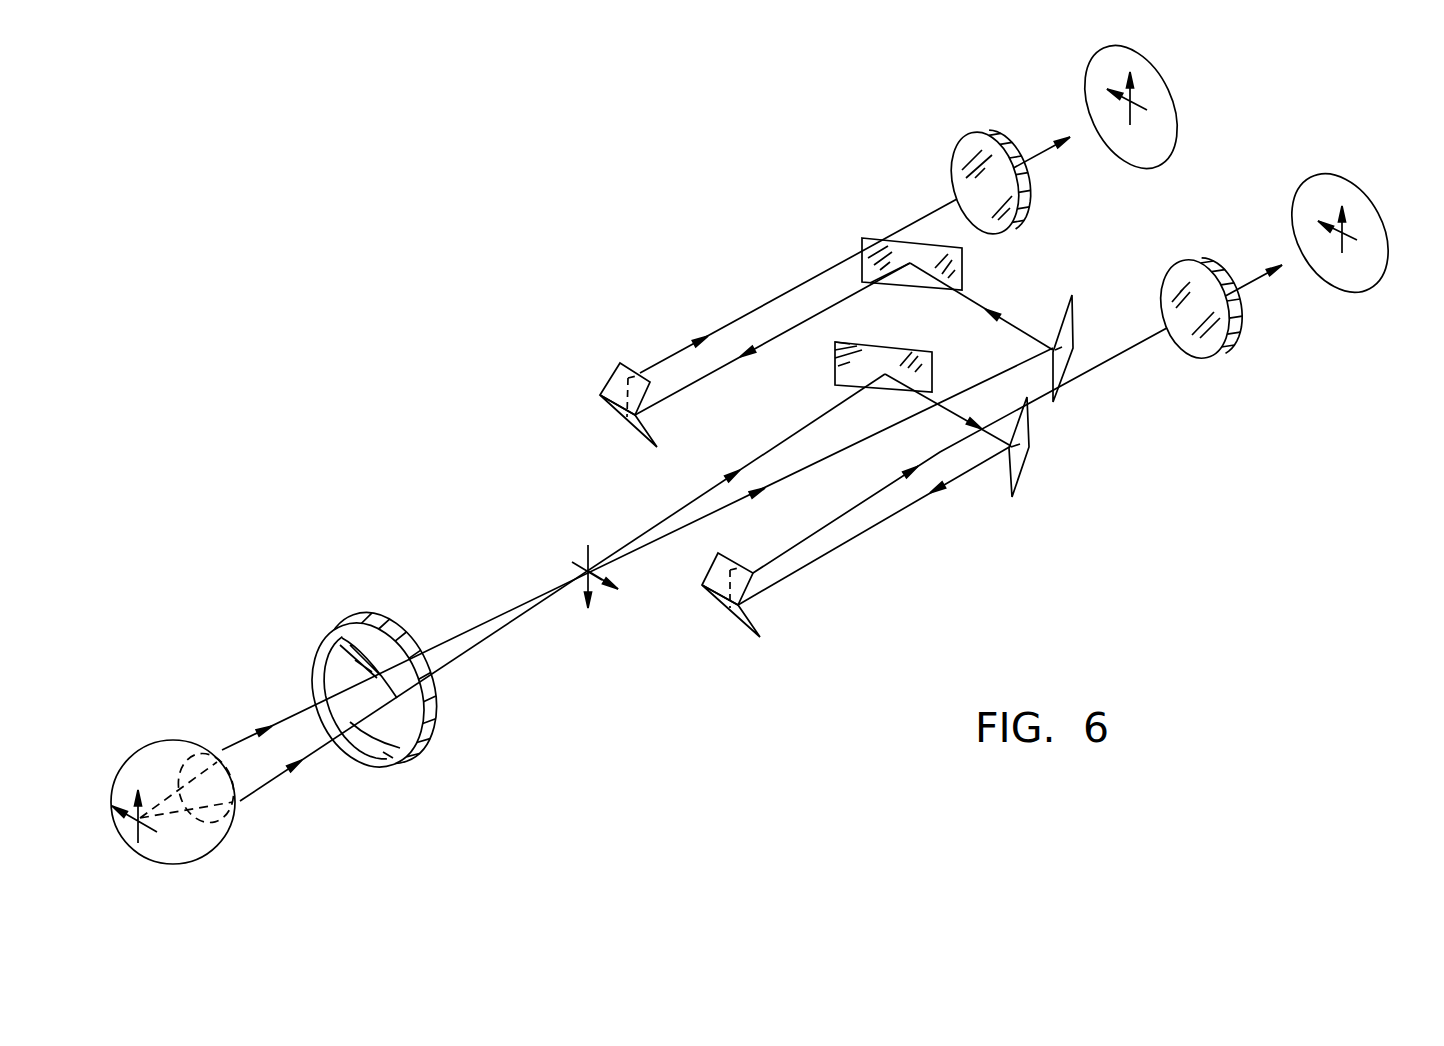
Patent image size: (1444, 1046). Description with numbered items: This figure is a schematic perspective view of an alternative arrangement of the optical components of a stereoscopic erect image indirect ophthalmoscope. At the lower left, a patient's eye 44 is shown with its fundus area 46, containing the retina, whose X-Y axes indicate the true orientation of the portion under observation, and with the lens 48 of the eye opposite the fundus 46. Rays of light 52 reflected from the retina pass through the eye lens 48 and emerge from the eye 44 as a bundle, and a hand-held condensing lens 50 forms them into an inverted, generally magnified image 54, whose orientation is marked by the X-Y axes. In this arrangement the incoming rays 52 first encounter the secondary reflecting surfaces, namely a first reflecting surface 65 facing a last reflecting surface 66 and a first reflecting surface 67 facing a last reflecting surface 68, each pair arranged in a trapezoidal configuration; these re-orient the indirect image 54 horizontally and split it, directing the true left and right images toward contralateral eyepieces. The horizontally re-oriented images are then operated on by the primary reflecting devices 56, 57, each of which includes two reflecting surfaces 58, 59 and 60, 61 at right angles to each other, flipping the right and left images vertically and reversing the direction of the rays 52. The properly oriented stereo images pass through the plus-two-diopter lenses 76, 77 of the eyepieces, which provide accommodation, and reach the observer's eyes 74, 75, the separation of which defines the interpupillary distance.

The patient's eye 44 is at (174, 748).
The fundus area 46 is at (138, 823).
The lens of the eye 48 is at (222, 818).
The condensing lens 50 is at (334, 628).
The rays of light 52 is at (318, 748).
The inverted image 54 is at (583, 565).
The primary reflecting device 56 is at (712, 598).
The primary reflecting device 57 is at (600, 397).
The reflecting surface 58 is at (632, 432).
The reflecting surface 59 is at (603, 378).
The reflecting surface 60 is at (752, 633).
The reflecting surface 61 is at (712, 562).
The first reflecting surface 65 is at (836, 378).
The last reflecting surface 66 is at (1022, 482).
The first reflecting surface 67 is at (1072, 325).
The last reflecting surface 68 is at (962, 265).
The eye of the observer 74 is at (1384, 236).
The eye of the observer 75 is at (1167, 130).
The +2.00 diopter lens 76 is at (1182, 282).
The +2.00 diopter lens 77 is at (975, 146).